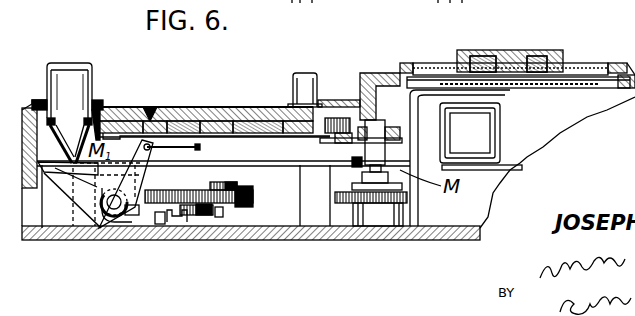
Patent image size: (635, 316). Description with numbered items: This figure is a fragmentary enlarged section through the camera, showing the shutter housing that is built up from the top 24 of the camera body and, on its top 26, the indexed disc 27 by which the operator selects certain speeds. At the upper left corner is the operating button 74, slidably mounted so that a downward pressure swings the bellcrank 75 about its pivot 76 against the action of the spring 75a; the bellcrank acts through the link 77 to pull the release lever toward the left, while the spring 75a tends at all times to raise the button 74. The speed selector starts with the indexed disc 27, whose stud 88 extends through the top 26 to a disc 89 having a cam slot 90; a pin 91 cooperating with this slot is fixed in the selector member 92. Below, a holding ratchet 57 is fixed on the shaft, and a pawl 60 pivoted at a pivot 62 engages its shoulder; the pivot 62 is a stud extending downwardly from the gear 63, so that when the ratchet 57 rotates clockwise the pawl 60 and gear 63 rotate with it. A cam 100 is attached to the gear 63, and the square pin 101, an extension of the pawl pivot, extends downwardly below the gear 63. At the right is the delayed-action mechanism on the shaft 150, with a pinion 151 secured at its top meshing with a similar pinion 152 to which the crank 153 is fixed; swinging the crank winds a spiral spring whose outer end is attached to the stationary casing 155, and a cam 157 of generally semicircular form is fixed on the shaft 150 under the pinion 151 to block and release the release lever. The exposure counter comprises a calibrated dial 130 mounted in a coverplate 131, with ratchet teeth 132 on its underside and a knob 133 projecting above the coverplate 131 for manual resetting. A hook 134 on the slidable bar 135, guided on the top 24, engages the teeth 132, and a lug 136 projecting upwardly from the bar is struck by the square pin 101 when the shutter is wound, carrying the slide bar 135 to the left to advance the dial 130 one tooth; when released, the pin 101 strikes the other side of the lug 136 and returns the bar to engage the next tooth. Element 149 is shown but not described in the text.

The top of the camera body 24 is at (40, 242).
The top of the housing 26 is at (118, 107).
The indexed disc 27 is at (272, 107).
The holding ratchet 57 is at (133, 242).
The pawl 60 is at (232, 210).
The pivot 62 is at (205, 242).
The gear 63 is at (250, 197).
The operating button 74 is at (67, 73).
The bellcrank 75 is at (80, 242).
The spring 75a is at (95, 242).
The pivot 76 is at (106, 242).
The link 77 is at (197, 148).
The stud 88 is at (222, 121).
The disc 89 is at (255, 107).
The cam slot 90 is at (210, 107).
The pin 91 is at (193, 120).
The selector member 92 is at (275, 133).
The cam 100 is at (240, 186).
The square pin 101 is at (185, 242).
The calibrated dial 130 is at (600, 75).
The coverplate 131 is at (592, 65).
The ratchet teeth 132 is at (553, 82).
The knob 133 is at (555, 50).
The hook 134 is at (527, 80).
The slidable bar 135 is at (288, 240).
The lug 136 is at (160, 242).
The shaft 149 is at (340, 203).
The shaft 150 is at (385, 185).
The pinion 151 is at (383, 128).
The pinion 152 is at (355, 100).
The crank 153 is at (320, 100).
The stationary casing 155 is at (383, 215).
The cam 157 is at (342, 136).